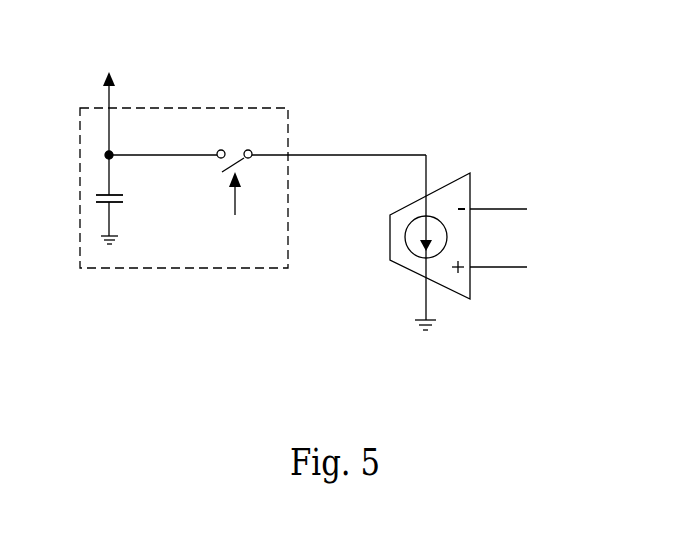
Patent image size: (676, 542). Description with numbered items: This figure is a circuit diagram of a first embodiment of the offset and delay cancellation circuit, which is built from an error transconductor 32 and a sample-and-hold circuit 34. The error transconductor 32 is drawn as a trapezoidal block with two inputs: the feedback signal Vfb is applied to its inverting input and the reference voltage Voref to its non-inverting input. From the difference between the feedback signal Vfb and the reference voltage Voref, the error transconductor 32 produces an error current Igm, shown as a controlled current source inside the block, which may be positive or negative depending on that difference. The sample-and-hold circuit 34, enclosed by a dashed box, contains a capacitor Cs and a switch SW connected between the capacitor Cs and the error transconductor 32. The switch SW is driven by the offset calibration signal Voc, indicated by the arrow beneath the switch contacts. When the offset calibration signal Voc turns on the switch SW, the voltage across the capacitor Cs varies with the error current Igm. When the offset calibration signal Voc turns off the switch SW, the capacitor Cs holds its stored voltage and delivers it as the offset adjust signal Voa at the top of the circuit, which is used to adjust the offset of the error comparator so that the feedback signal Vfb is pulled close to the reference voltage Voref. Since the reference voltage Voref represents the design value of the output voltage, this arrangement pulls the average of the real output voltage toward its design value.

The error transconductor 32 is at (403, 266).
The sample-and-hold circuit 34 is at (182, 268).
The capacitor Cs is at (128, 199).
The switch SW is at (234, 146).
The offset adjust signal Voa is at (109, 100).
The offset calibration signal Voc is at (234, 210).
The error current Igm is at (392, 237).
The feedback signal Vfb is at (524, 208).
The reference voltage Voref is at (536, 266).